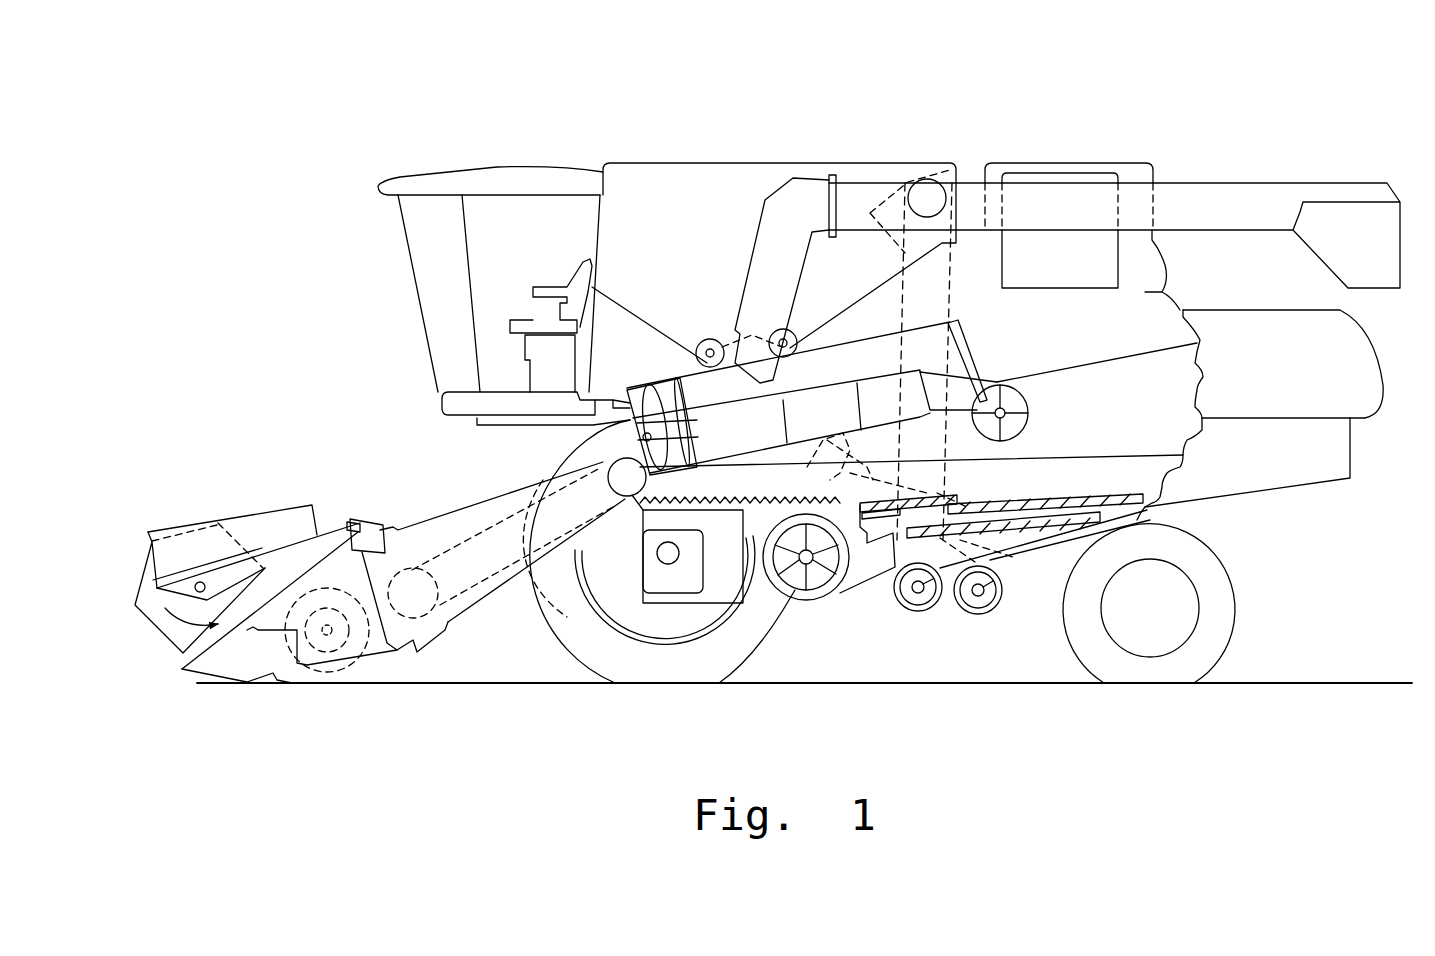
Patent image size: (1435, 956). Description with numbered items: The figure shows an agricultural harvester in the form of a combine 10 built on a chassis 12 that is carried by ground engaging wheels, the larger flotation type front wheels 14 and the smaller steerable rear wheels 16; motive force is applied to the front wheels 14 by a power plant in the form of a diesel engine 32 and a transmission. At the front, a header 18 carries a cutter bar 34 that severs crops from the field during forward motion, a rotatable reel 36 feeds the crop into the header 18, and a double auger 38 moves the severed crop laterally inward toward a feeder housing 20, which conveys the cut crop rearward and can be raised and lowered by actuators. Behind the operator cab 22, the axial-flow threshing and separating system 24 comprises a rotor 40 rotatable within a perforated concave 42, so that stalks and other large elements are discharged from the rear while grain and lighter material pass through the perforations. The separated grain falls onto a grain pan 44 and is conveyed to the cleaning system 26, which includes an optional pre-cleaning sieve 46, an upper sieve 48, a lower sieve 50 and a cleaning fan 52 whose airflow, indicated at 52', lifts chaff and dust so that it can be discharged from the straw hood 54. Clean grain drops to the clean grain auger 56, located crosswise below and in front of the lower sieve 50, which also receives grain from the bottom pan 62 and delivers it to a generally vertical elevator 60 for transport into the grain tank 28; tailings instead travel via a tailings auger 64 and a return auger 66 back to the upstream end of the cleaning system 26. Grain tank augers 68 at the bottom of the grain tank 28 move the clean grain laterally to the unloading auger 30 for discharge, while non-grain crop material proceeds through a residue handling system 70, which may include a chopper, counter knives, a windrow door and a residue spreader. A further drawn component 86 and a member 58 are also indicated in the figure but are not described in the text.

The combine 10 is at (481, 144).
The chassis 12 is at (1162, 510).
The front wheels 14 is at (568, 638).
The rear wheels 16 is at (1232, 620).
The header 18 is at (237, 496).
The feeder housing 20 is at (458, 500).
The operator cab 22 is at (408, 262).
The threshing and separating system 24 is at (571, 437).
The cleaning system 26 is at (876, 607).
The grain tank 28 is at (660, 170).
The unloading auger 30 is at (1250, 185).
The diesel engine 32 is at (1045, 175).
The cutter bar 34 is at (270, 679).
The rotatable reel 36 is at (162, 582).
The double auger 38 is at (333, 653).
The rotor 40 is at (660, 388).
The perforated concave 42 is at (848, 372).
The grain pan 44 is at (636, 512).
The pre-cleaning sieve 46 is at (955, 503).
The upper sieve 48 is at (1060, 500).
The lower sieve 50 is at (1030, 545).
The cleaning fan 52 is at (806, 594).
The fan air flow 52' is at (792, 668).
The straw hood 54 is at (1365, 355).
The clean grain auger 56 is at (922, 612).
The frame member 58 is at (1080, 532).
The elevator 60 is at (955, 297).
The bottom pan 62 is at (1078, 538).
The tailings auger 64 is at (975, 615).
The return auger 66 is at (889, 487).
The grain tank augers 68 is at (704, 340).
The residue handling system 70 is at (1312, 492).
The unloading conveyor 86 is at (947, 160).